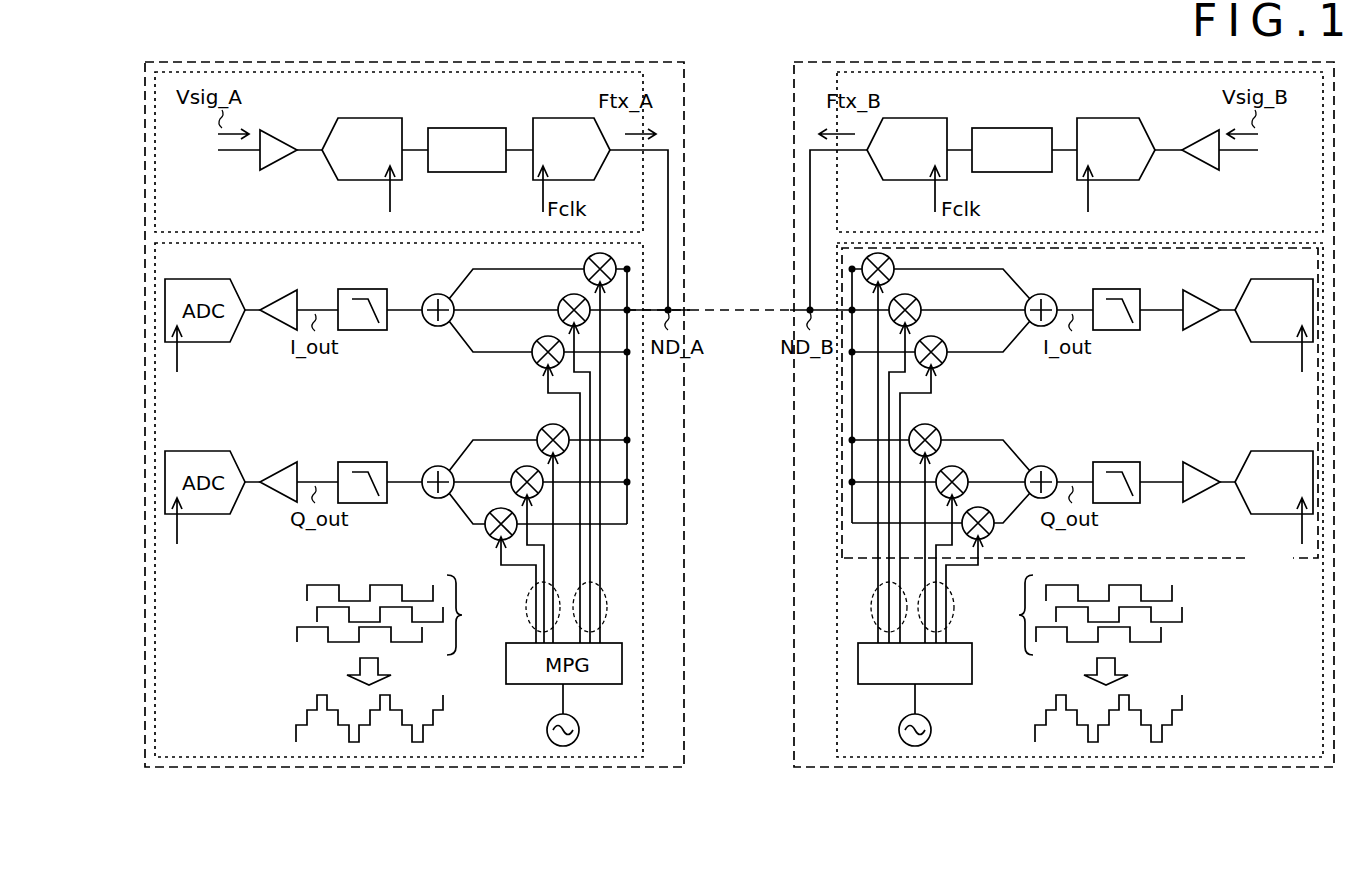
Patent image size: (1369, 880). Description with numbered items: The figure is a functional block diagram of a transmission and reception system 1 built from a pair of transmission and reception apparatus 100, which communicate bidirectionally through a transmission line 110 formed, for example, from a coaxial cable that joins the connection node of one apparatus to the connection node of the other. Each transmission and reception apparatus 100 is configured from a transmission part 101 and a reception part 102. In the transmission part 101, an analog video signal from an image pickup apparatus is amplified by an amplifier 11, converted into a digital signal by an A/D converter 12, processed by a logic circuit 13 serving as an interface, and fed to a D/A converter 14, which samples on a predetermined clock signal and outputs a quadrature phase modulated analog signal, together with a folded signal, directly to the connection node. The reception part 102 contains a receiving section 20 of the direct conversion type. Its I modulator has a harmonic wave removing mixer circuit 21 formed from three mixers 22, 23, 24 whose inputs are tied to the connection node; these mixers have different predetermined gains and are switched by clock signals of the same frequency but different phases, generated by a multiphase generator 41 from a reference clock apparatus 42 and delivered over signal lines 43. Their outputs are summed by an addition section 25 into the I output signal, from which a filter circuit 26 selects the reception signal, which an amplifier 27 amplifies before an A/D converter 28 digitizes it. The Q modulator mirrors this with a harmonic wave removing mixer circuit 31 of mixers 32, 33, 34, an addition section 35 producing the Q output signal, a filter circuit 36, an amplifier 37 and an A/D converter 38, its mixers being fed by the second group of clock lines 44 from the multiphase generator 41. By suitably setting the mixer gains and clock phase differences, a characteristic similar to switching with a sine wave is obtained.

The transmission and reception system 1 is at (732, 47).
The transmission and reception apparatus 100 is at (397, 62).
The transmission part 101 is at (198, 232).
The reception part 102 is at (198, 757).
The amplifier 11 is at (273, 131).
The A/D converter 12 is at (362, 119).
The logic circuit 13 is at (462, 129).
The D/A converter 14 is at (570, 119).
The transmission line 110 is at (737, 309).
The receiving section 20 is at (1080, 411).
The harmonic wave removing mixer circuit 21 is at (969, 441).
The mixer 22 is at (892, 260).
The mixer 23 is at (919, 300).
The mixer 24 is at (945, 342).
The addition section 25 is at (1040, 294).
The filter circuit 26 is at (1117, 289).
The amplifier 27 is at (1199, 295).
The A/D converter 28 is at (1263, 344).
The harmonic wave removing mixer circuit 31 is at (969, 524).
The mixer 32 is at (936, 430).
The mixer 33 is at (961, 473).
The mixer 34 is at (990, 535).
The addition section 35 is at (1046, 466).
The filter circuit 36 is at (1117, 462).
The amplifier 37 is at (1199, 467).
The A/D converter 38 is at (1274, 451).
The multiphase generator 41 is at (868, 686).
The reference clock apparatus 42 is at (930, 719).
The signal lines 43 is at (871, 591).
The Q-channel pulse signal group 44 is at (953, 591).